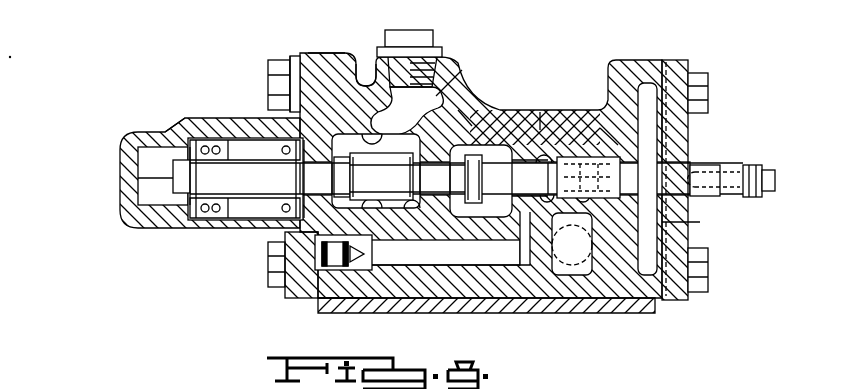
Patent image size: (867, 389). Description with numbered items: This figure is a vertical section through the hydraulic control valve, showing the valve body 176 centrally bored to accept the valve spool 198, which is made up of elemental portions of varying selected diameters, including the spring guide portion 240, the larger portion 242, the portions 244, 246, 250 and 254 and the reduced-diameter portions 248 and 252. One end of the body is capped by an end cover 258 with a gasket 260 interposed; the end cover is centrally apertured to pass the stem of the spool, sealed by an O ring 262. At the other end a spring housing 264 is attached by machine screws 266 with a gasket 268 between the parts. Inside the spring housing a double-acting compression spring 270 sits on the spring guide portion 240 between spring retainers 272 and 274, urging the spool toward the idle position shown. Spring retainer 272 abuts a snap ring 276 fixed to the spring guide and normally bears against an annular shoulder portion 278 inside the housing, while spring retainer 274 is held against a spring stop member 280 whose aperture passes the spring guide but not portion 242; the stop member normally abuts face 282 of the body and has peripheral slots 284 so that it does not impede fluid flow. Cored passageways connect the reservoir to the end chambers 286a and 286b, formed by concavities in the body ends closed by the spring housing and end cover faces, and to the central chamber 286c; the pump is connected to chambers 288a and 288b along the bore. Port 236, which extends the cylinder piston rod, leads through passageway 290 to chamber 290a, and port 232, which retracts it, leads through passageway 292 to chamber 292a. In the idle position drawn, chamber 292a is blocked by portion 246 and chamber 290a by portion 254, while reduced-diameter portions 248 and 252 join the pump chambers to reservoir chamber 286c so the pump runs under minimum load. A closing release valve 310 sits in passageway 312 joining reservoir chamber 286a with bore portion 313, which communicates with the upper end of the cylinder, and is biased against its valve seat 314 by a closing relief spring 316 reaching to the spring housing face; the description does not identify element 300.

The valve body 176 is at (486, 113).
The valve spool 198 is at (744, 162).
The port 232 is at (438, 44).
The port 236 is at (580, 314).
The spring guide portion 240 is at (245, 179).
The valve spool portion 242 is at (282, 179).
The valve spool elemental portion 244 is at (381, 177).
The valve spool portion 246 is at (381, 176).
The reduced-diameter portion 248 is at (460, 172).
The valve spool elemental portion 250 is at (500, 150).
The reduced-diameter portion 252 is at (484, 164).
The valve spool portion 254 is at (556, 140).
The end cover 258 is at (698, 62).
The gasket 260 is at (668, 58).
The O ring 262 is at (692, 158).
The spring housing 264 is at (134, 146).
The machine screws 266 is at (282, 60).
The gasket 268 is at (312, 53).
The double-acting compression spring 270 is at (184, 222).
The spring retainer 272 is at (162, 226).
The spring retainer 274 is at (248, 222).
The snap ring 276 is at (138, 178).
The annular shoulder portion 278 is at (160, 128).
The spring stop member 280 is at (268, 258).
The face 282 is at (268, 100).
The slots 284 is at (388, 216).
The end chamber 286a is at (280, 284).
The end chamber 286b is at (700, 246).
The central chamber 286c is at (504, 226).
The chamber 288a is at (476, 114).
The chamber 288b is at (552, 112).
The passageway 290 is at (596, 238).
The chamber 290a is at (582, 150).
The passageway 292 is at (444, 96).
The chamber 292a is at (364, 86).
The pin 300 is at (696, 208).
The closing release valve 310 is at (342, 302).
The passageway 312 is at (494, 255).
The portion of the central body bore 313 is at (520, 142).
The valve seat 314 is at (410, 265).
The closing relief spring 316 is at (300, 302).